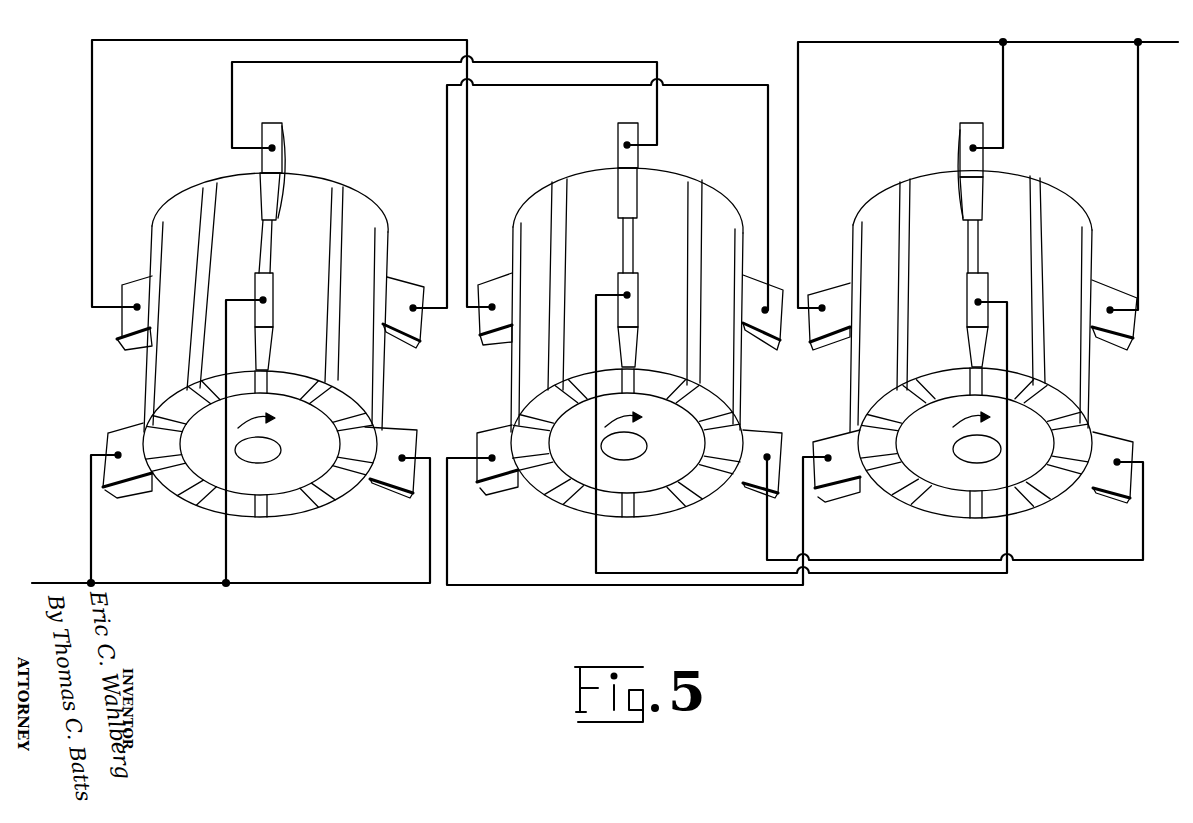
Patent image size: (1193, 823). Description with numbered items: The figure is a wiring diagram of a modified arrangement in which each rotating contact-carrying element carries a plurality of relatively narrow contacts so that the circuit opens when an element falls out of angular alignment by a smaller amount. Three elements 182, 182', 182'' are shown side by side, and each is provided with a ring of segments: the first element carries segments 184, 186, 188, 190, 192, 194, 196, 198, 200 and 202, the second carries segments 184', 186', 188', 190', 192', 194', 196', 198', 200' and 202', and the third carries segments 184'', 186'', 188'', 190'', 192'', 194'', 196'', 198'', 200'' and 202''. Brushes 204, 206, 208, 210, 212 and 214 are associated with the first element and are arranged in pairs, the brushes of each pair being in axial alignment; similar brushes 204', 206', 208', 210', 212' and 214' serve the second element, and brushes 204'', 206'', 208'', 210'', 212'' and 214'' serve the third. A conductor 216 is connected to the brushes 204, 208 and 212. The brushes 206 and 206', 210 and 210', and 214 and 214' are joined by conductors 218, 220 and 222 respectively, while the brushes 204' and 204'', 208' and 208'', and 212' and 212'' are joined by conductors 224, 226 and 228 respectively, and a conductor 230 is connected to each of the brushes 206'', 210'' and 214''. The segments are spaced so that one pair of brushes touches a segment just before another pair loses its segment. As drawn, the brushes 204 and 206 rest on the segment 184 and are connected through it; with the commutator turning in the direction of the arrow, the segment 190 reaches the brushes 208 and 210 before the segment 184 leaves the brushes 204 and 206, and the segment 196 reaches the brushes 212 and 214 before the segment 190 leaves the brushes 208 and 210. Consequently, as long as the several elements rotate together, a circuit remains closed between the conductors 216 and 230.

The element 182 is at (271, 292).
The element 182' is at (627, 287).
The element 182'' is at (978, 294).
The segment 184 is at (260, 444).
The segment 184' is at (627, 443).
The segment 184'' is at (975, 443).
The segment 186 is at (329, 397).
The segment 186' is at (698, 396).
The segment 186'' is at (1046, 396).
The segment 188 is at (353, 431).
The segment 188' is at (722, 430).
The segment 188'' is at (1070, 431).
The segment 190 is at (351, 473).
The segment 190' is at (718, 472).
The segment 190'' is at (1065, 473).
The segment 192 is at (313, 508).
The segment 192' is at (684, 507).
The segment 192'' is at (1041, 507).
The segment 194 is at (260, 518).
The segment 194' is at (631, 516).
The segment 194'' is at (979, 515).
The segment 196 is at (194, 505).
The segment 196' is at (562, 504).
The segment 196'' is at (911, 504).
The segment 198 is at (162, 485).
The segment 198' is at (530, 484).
The segment 198'' is at (875, 484).
The segment 200 is at (139, 417).
The segment 200' is at (505, 416).
The segment 200'' is at (854, 417).
The segment 202 is at (191, 397).
The segment 202' is at (558, 396).
The segment 202'' is at (905, 396).
The brush 204 is at (283, 321).
The brush 204' is at (649, 320).
The brush 204'' is at (1000, 316).
The brush 206 is at (295, 193).
The brush 206' is at (590, 195).
The brush 206'' is at (938, 198).
The brush 208 is at (398, 447).
The brush 208' is at (770, 447).
The brush 208'' is at (1123, 451).
The brush 210 is at (410, 298).
The brush 210' is at (767, 329).
The brush 210'' is at (1120, 332).
The brush 212 is at (126, 484).
The brush 212' is at (492, 483).
The brush 212'' is at (836, 487).
The brush 214 is at (122, 329).
The brush 214' is at (486, 326).
The brush 214'' is at (829, 332).
The conductor 216 is at (62, 582).
The conductor 218 is at (518, 58).
The conductor 220 is at (526, 90).
The conductor 222 is at (92, 150).
The conductor 224 is at (655, 572).
The conductor 226 is at (1100, 566).
The conductor 228 is at (790, 590).
The conductor 230 is at (1162, 40).